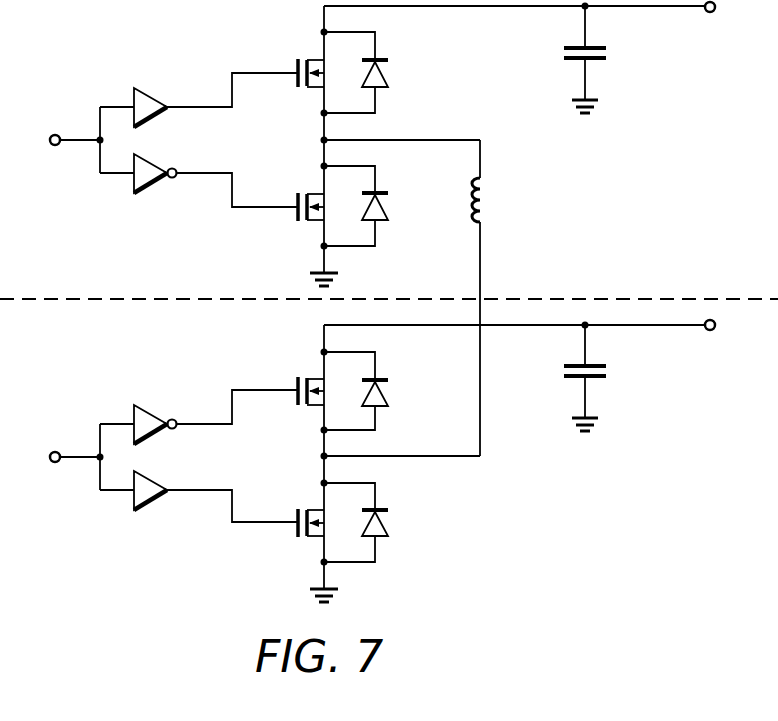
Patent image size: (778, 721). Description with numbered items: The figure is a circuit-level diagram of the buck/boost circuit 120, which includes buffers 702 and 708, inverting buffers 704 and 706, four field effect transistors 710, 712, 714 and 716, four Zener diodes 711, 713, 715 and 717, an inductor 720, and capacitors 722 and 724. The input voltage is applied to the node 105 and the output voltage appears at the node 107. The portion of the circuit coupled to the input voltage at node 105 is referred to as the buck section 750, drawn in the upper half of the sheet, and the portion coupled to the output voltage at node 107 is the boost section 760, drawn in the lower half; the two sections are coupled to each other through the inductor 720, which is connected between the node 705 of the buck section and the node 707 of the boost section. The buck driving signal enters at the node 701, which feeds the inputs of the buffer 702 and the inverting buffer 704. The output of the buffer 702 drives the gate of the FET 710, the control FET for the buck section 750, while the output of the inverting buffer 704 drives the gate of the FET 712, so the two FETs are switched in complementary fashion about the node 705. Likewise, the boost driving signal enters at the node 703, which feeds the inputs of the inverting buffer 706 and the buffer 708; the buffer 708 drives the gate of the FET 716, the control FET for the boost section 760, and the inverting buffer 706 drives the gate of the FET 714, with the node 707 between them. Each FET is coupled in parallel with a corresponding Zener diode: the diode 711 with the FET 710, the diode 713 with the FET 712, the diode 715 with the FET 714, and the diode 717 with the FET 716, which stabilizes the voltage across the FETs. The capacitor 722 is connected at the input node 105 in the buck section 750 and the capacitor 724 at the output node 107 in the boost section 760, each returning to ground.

The node 701 is at (55, 134).
The buffer 702 is at (148, 89).
The inverting buffer 704 is at (150, 192).
The node 705 is at (320, 140).
The Field Effect Transistor 710 is at (296, 60).
The Zener diode 711 is at (388, 79).
The Field Effect Transistor 712 is at (296, 220).
The Zener diode 713 is at (388, 212).
The inductor 720 is at (469, 181).
The capacitor 722 is at (603, 60).
The node 105 is at (709, 13).
The buck section 750 is at (672, 196).
The node 703 is at (55, 451).
The inverting buffer 706 is at (148, 406).
The buffer 708 is at (150, 510).
The node 707 is at (320, 456).
The Field Effect Transistor 714 is at (296, 378).
The Zener diode 715 is at (388, 398).
The Field Effect Transistor 716 is at (296, 537).
The Zener diode 717 is at (388, 527).
The capacitor 724 is at (603, 378).
The node 107 is at (709, 331).
The boost section 760 is at (671, 511).
The buck/boost circuit 120 is at (548, 615).